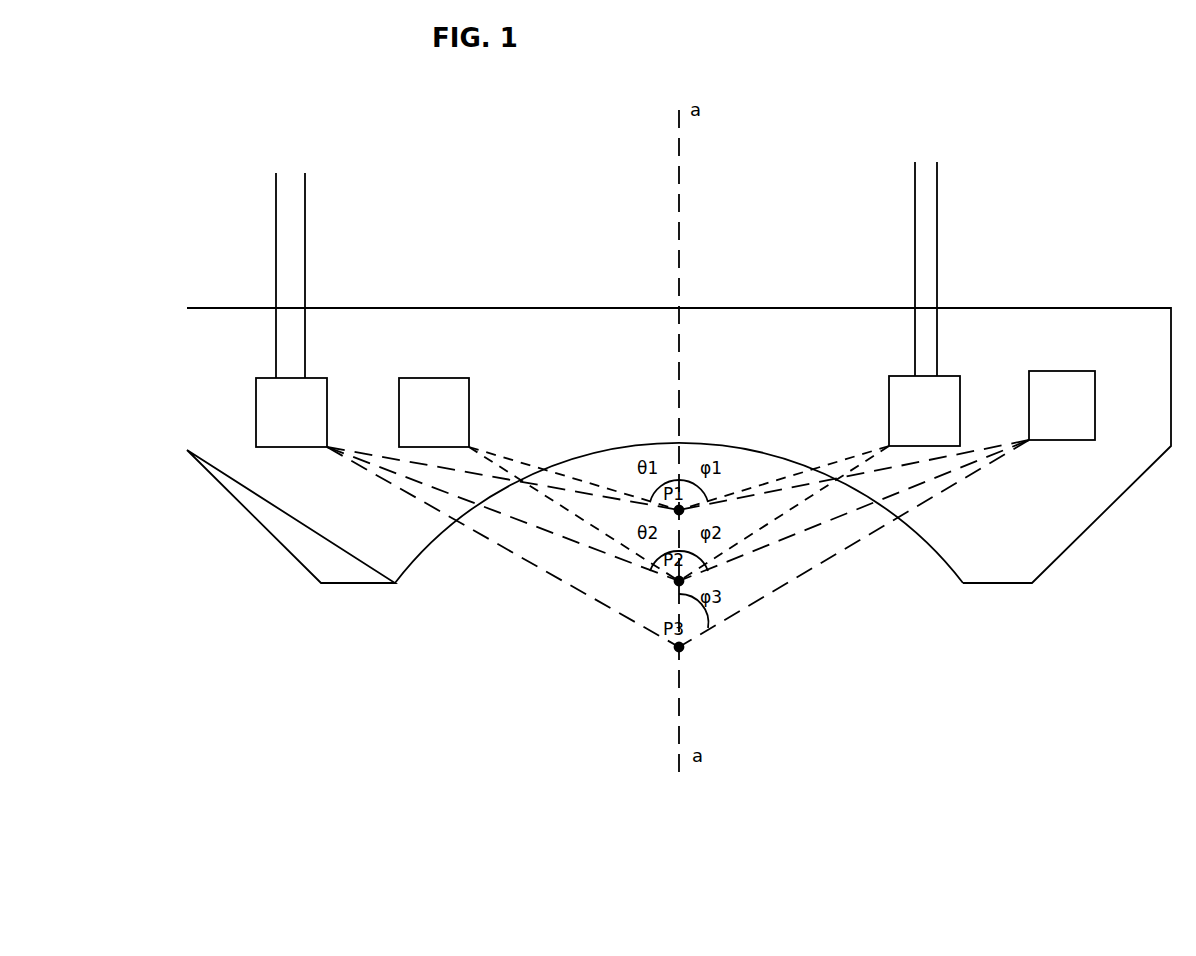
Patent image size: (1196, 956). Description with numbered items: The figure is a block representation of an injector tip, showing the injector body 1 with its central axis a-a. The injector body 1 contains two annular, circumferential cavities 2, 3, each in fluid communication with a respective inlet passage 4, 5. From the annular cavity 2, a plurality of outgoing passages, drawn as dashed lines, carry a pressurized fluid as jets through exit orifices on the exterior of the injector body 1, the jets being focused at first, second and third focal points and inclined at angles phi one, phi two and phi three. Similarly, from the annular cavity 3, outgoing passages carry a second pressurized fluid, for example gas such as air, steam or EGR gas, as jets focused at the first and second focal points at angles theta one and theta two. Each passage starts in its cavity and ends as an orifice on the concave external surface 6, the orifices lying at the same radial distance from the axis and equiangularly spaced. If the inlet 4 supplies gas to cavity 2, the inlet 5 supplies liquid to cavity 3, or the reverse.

The injector body 1 is at (679, 445).
The annular cavity 2 is at (675, 409).
The annular cavity 3 is at (679, 411).
The inlet passage 4 is at (290, 275).
The inlet passage 5 is at (926, 269).
The concave external surface 6 is at (418, 560).